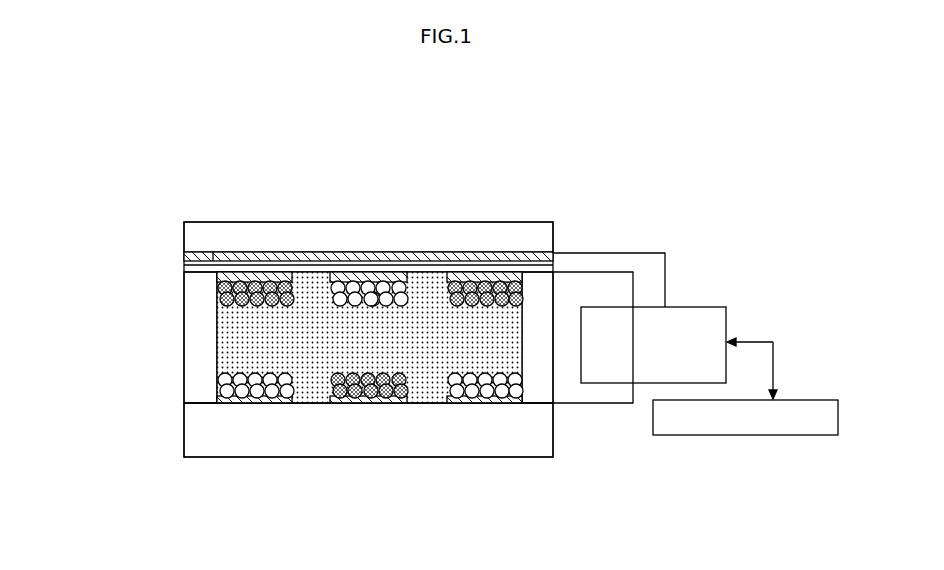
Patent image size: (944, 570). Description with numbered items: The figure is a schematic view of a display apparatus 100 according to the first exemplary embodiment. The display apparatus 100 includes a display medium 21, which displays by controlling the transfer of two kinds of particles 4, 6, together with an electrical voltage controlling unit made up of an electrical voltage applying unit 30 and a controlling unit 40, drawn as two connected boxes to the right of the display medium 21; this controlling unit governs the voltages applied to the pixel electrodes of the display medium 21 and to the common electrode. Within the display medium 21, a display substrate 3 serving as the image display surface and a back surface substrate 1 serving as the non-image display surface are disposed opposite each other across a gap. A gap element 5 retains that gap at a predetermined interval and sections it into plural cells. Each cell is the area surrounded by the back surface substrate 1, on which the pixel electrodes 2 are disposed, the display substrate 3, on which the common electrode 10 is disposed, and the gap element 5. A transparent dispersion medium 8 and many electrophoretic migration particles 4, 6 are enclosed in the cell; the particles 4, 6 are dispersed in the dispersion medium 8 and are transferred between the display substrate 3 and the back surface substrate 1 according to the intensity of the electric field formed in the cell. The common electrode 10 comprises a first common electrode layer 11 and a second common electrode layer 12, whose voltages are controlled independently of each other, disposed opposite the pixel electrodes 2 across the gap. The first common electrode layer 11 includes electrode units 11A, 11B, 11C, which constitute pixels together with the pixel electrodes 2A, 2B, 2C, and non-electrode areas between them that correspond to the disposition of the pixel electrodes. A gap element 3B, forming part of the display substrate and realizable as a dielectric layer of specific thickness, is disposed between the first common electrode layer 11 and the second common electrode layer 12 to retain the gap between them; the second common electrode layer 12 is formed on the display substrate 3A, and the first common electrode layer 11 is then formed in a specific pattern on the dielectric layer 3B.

The back surface substrate 1 is at (547, 428).
The pixel electrodes 2 is at (507, 488).
The pixel electrode 2A is at (250, 404).
The pixel electrode 2B is at (368, 404).
The pixel electrode 2C is at (483, 404).
The display substrate 3 is at (122, 221).
The display substrate 3A is at (195, 237).
The gap element 3B is at (195, 264).
The particles 4 is at (355, 372).
The gap element 5 is at (195, 296).
The particles 6 is at (373, 300).
The dispersion medium 8 is at (225, 340).
The common electrode 10 is at (190, 139).
The first common electrode layer 11 is at (505, 178).
The electrode unit 11A is at (253, 278).
The electrode unit 11B is at (370, 278).
The electrode unit 11C is at (485, 278).
The second common electrode layer 12 is at (213, 262).
The display medium 21 is at (135, 363).
The electrical voltage applying unit 30 is at (688, 306).
The controlling unit 40 is at (773, 436).
The display apparatus 100 is at (638, 148).